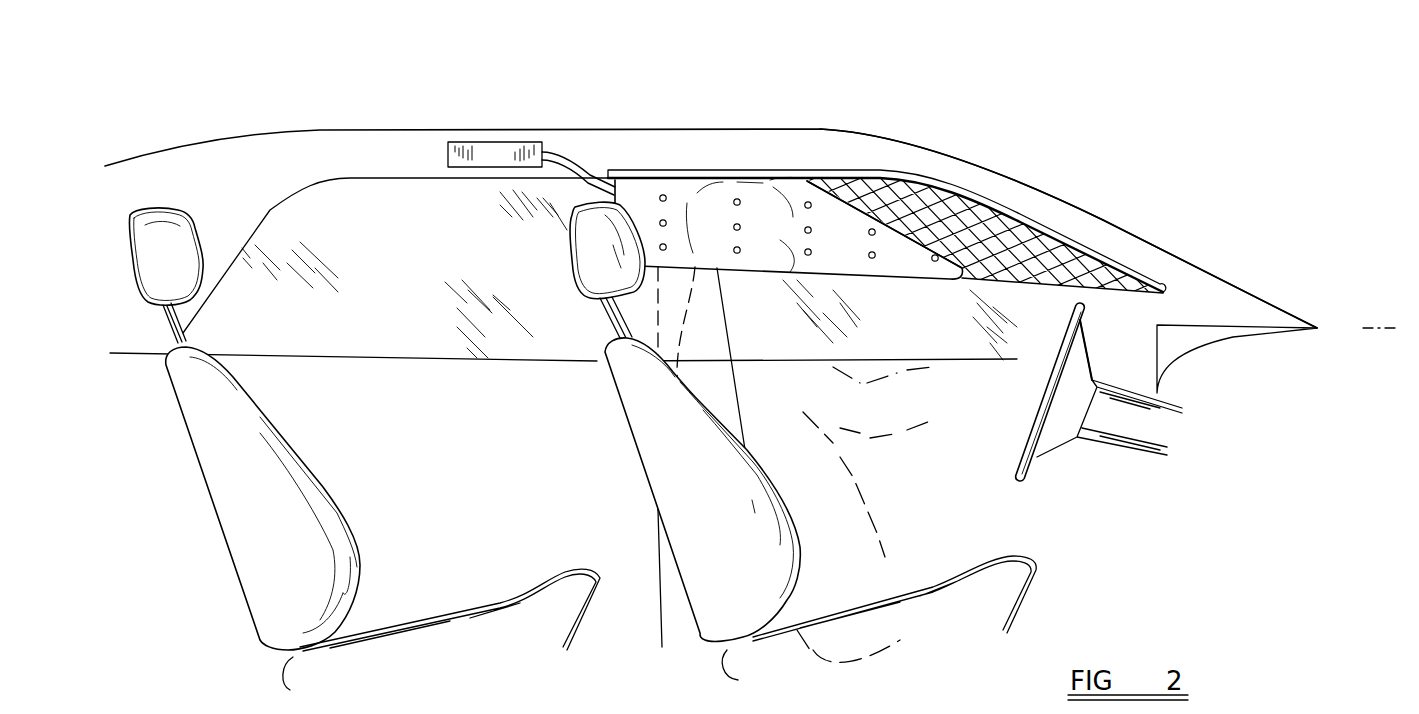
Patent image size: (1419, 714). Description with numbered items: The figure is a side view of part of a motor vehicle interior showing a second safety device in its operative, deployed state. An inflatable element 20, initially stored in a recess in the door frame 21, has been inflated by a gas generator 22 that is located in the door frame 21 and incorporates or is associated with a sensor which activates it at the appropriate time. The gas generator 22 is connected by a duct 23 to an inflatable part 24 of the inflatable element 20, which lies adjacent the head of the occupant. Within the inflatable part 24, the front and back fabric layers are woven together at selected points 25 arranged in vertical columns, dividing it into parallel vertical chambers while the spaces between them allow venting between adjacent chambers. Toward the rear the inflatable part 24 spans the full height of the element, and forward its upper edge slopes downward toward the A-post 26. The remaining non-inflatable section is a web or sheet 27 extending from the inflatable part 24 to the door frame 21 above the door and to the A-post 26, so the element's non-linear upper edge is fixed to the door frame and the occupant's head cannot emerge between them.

The inflatable element 20 is at (965, 228).
The door frame 21 is at (1013, 193).
The gas generator 22 is at (485, 160).
The duct 23 is at (562, 160).
The inflatable part 24 is at (683, 215).
The selected points 25 is at (806, 201).
The A-post 26 is at (1133, 257).
The web or sheet 27 is at (1055, 240).